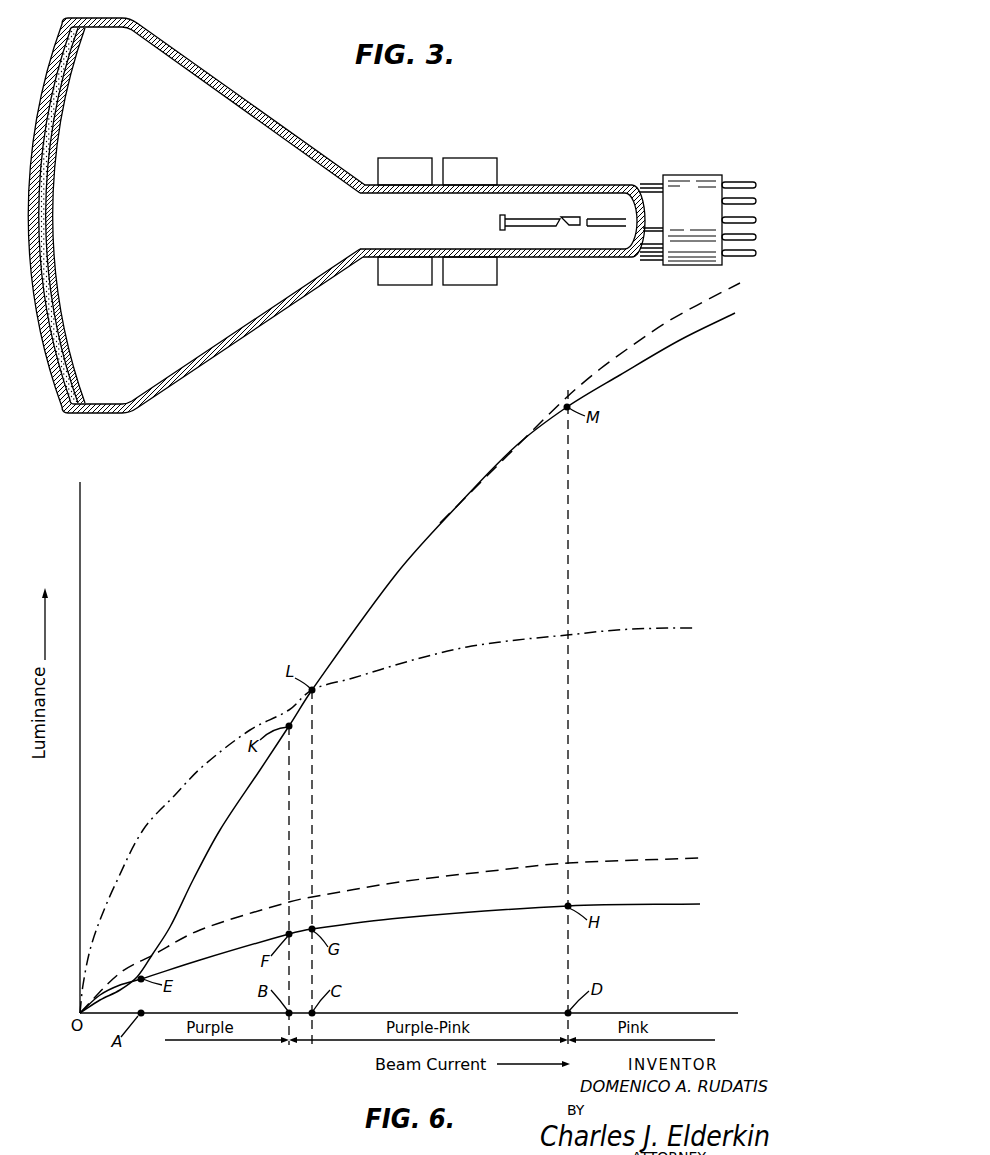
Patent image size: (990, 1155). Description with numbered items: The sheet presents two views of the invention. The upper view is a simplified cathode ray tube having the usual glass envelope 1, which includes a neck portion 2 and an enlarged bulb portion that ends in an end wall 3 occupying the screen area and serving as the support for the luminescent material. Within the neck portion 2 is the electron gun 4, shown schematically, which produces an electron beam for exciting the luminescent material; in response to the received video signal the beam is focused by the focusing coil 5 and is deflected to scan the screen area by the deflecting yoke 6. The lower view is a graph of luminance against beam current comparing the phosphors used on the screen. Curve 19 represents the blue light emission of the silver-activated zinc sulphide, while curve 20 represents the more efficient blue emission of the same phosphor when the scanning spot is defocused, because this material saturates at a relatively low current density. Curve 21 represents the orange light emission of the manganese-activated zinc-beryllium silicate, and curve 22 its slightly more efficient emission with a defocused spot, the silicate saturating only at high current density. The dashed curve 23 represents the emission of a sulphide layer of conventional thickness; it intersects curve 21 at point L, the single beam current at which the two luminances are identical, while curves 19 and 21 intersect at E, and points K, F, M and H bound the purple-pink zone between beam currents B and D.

In FIG. 3, the glass envelope 1 is at (270, 326).
In FIG. 3, the neck portion 2 is at (553, 184).
In FIG. 3, the end wall 3 is at (43, 87).
In FIG. 3, the electron gun 4 is at (562, 234).
In FIG. 3, the focusing coil 5 is at (464, 157).
In FIG. 3, the deflecting yoke 6 is at (401, 157).
In FIG. 6, the curve of blue light emission 19 is at (670, 904).
In FIG. 6, the curve of defocused blue light emission 20 is at (677, 853).
In FIG. 6, the curve of orange light emission 21 is at (712, 323).
In FIG. 6, the curve of defocused orange light emission 22 is at (735, 287).
In FIG. 6, the curve of conventional-thickness sulphide emission 23 is at (666, 628).